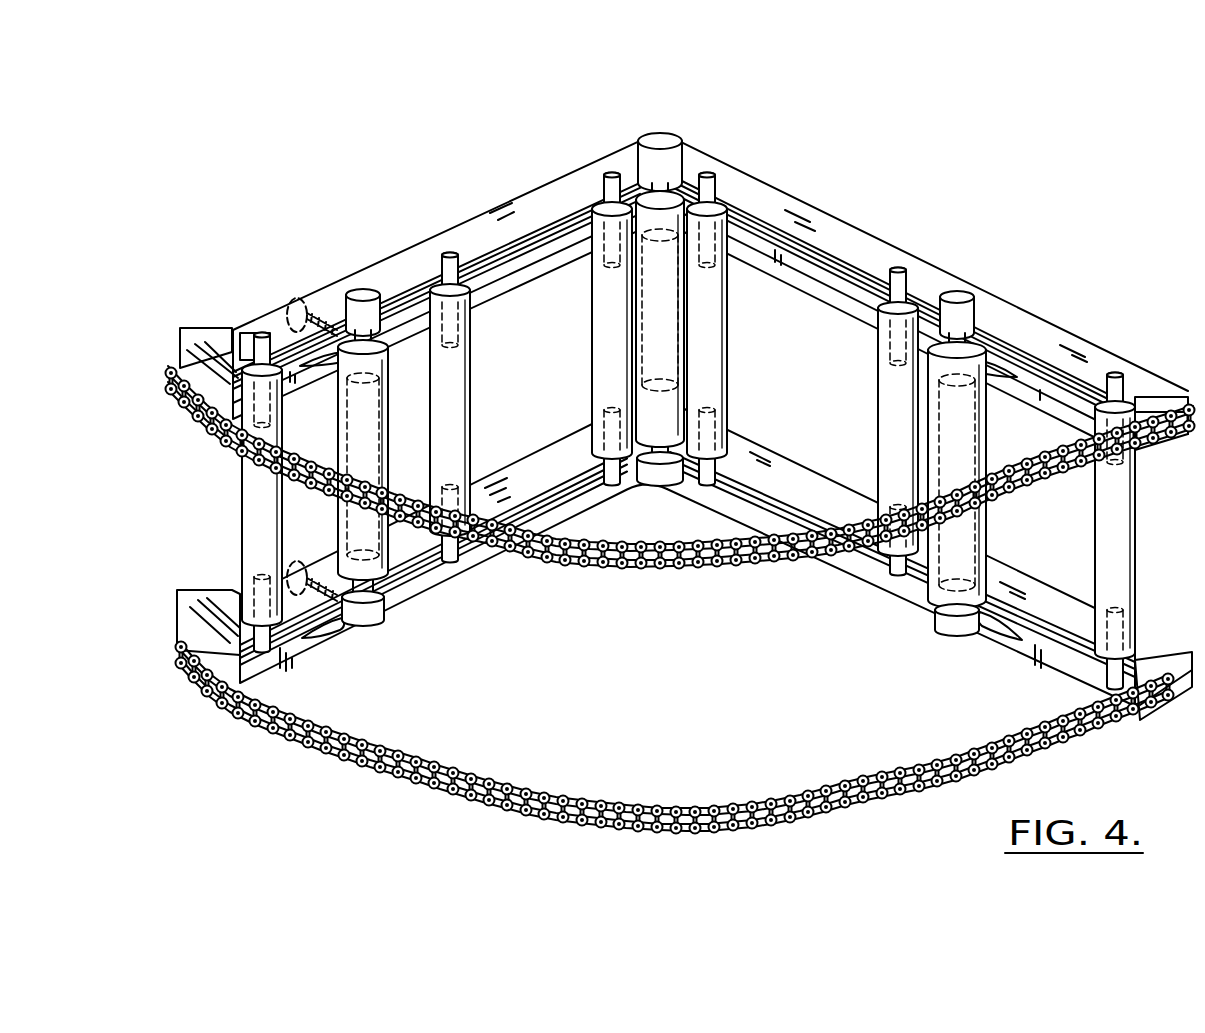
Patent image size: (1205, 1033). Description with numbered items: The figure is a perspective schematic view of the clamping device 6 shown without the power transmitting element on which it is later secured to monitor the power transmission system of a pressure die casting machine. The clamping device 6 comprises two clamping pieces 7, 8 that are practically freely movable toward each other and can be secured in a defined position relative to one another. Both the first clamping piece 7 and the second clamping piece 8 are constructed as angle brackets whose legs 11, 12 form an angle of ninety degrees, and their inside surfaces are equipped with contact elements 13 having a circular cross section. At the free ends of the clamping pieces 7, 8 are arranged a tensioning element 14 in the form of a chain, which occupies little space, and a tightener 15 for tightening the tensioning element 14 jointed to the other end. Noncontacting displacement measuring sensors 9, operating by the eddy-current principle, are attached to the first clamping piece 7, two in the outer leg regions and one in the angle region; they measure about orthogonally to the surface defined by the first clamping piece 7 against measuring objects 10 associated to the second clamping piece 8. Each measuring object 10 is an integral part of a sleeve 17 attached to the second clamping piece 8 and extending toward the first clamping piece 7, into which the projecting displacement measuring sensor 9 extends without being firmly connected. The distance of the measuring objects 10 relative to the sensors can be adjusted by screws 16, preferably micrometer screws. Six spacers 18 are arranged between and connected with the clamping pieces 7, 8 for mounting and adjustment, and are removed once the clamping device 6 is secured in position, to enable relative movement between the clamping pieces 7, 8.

The clamping device 6 is at (846, 181).
The first clamping piece 7 is at (512, 200).
The second clamping piece 8 is at (533, 458).
The displacement measuring sensor 9 is at (684, 165).
The measuring object 10 is at (606, 176).
The leg 11 is at (413, 258).
The leg 12 is at (868, 243).
The contact element 13 is at (433, 573).
The tensioning element 14 is at (677, 567).
The tightener 15 is at (210, 306).
The screw 16 is at (662, 480).
The sleeve 17 is at (340, 415).
The spacer 18 is at (1118, 530).